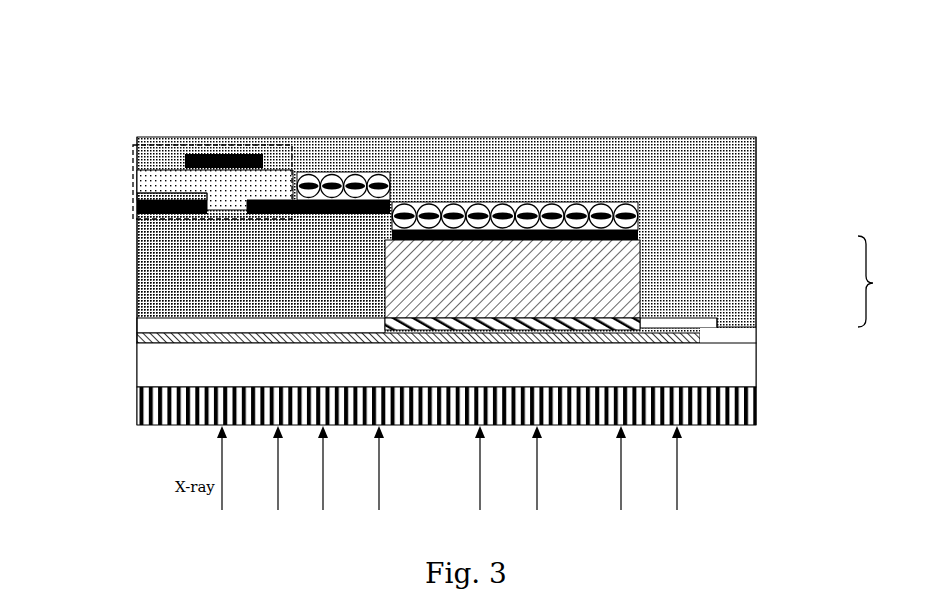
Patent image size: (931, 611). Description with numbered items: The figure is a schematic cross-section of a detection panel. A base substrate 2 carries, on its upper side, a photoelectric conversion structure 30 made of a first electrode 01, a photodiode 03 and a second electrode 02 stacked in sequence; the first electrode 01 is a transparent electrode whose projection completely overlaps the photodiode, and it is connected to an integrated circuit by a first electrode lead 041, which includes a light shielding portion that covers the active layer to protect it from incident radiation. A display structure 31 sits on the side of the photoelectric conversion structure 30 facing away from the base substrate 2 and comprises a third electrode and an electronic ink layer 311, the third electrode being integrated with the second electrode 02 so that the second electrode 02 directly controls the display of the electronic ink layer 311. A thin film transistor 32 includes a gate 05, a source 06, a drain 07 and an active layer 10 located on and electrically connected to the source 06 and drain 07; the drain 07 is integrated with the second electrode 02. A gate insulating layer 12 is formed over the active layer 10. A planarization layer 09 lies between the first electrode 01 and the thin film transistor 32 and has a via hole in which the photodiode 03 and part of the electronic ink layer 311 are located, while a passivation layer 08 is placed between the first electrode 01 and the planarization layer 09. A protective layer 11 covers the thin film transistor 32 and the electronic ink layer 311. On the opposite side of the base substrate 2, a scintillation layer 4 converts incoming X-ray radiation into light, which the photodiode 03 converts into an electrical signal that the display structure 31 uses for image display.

The protective layer 11 is at (477, 167).
The planarization layer 09 is at (165, 270).
The passivation layer 08 is at (170, 326).
The first electrode lead 041 is at (137, 340).
The gate insulating layer 12 is at (162, 192).
The active layer 10 is at (137, 197).
The source 06 is at (137, 209).
The gate 05 is at (258, 154).
The drain 07 is at (268, 202).
The thin film transistor 32 is at (226, 146).
The electronic ink layer 311 is at (573, 206).
The display structure 31 is at (635, 202).
The second electrode 02 is at (638, 236).
The photodiode 03 is at (578, 282).
The first electrode 01 is at (640, 327).
The photoelectric conversion structure 30 is at (876, 281).
The base substrate 2 is at (705, 368).
The scintillation layer 4 is at (420, 412).